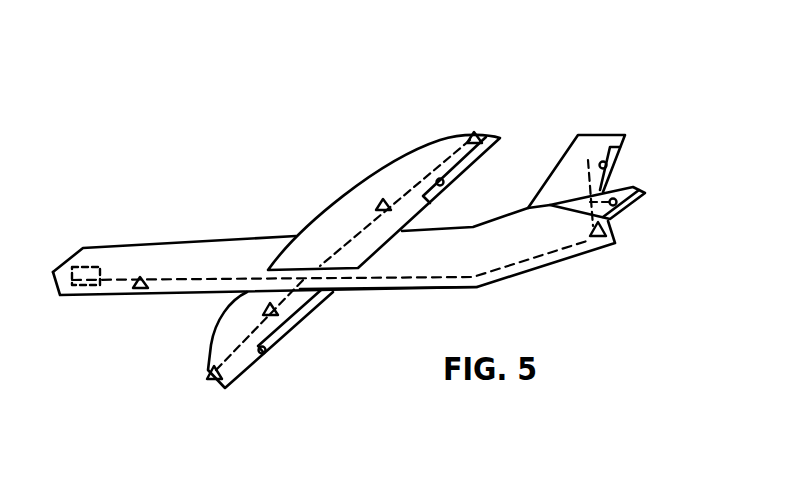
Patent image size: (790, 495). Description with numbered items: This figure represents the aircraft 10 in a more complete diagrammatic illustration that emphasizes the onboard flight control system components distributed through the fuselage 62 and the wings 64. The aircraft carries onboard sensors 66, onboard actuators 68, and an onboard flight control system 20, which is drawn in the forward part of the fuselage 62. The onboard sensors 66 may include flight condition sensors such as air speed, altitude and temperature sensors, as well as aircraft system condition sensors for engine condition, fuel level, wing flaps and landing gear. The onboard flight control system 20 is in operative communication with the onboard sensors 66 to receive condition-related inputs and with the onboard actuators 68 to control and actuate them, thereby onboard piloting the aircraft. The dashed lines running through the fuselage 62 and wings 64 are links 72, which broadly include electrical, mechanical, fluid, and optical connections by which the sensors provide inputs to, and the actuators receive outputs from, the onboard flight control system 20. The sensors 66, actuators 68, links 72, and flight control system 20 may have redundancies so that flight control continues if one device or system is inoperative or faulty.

The aircraft 10 is at (187, 175).
The onboard flight control system 20 is at (90, 265).
The fuselage 62 is at (338, 292).
The wings 64 is at (403, 160).
The onboard sensors 66 is at (141, 280).
The onboard actuators 68 is at (444, 184).
The links 72 is at (229, 279).